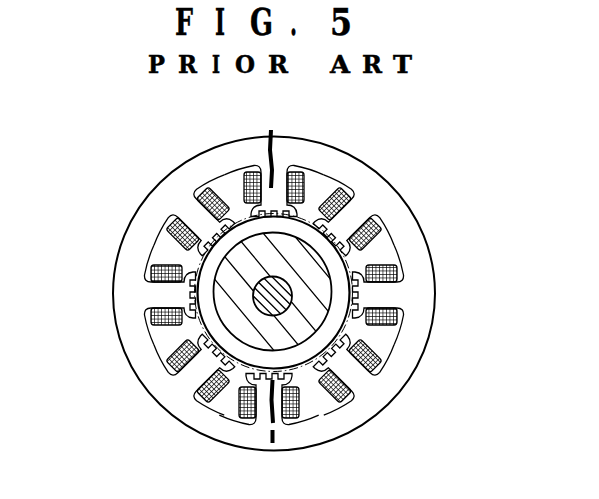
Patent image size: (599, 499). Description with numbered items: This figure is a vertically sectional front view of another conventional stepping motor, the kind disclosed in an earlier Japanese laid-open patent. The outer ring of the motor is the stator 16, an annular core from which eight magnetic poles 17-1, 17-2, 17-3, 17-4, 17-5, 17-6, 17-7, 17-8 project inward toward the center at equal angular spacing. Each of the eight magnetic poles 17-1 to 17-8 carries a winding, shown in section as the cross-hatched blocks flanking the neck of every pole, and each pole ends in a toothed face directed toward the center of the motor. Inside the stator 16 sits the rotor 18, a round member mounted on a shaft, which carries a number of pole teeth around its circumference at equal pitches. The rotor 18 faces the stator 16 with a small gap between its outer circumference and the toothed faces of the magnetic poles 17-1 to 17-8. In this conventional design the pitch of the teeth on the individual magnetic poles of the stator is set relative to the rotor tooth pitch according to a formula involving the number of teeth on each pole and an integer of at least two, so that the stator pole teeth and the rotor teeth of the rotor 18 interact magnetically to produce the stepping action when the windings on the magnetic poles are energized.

The stator 16 is at (195, 167).
The magnetic pole 17-1 is at (273, 187).
The magnetic pole 17-2 is at (353, 214).
The magnetic pole 17-3 is at (380, 292).
The magnetic pole 17-4 is at (348, 363).
The magnetic pole 17-5 is at (273, 398).
The magnetic pole 17-6 is at (193, 363).
The magnetic pole 17-7 is at (162, 290).
The magnetic pole 17-8 is at (190, 207).
The rotor 18 is at (353, 327).